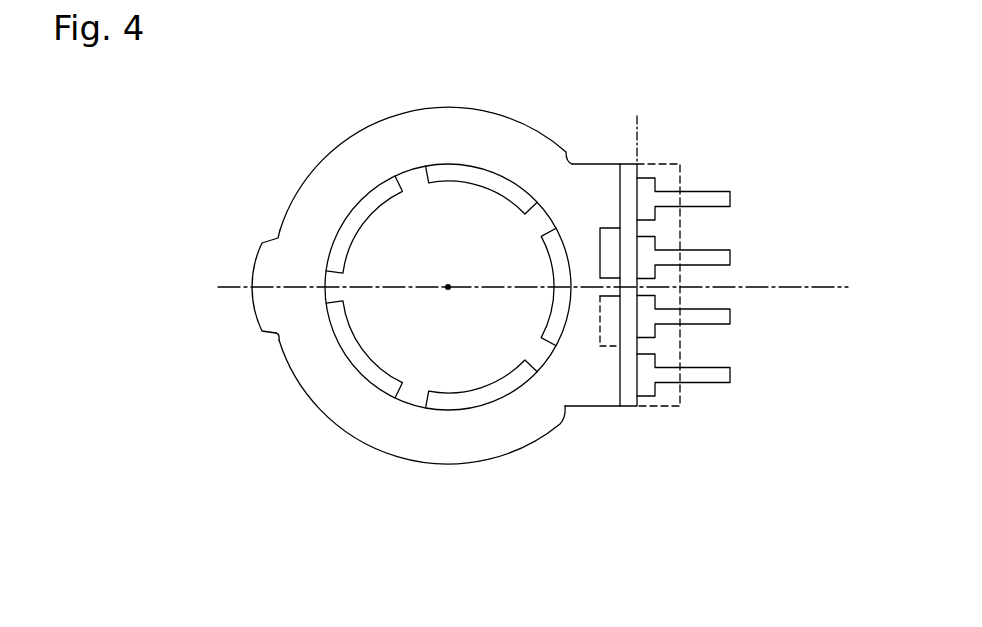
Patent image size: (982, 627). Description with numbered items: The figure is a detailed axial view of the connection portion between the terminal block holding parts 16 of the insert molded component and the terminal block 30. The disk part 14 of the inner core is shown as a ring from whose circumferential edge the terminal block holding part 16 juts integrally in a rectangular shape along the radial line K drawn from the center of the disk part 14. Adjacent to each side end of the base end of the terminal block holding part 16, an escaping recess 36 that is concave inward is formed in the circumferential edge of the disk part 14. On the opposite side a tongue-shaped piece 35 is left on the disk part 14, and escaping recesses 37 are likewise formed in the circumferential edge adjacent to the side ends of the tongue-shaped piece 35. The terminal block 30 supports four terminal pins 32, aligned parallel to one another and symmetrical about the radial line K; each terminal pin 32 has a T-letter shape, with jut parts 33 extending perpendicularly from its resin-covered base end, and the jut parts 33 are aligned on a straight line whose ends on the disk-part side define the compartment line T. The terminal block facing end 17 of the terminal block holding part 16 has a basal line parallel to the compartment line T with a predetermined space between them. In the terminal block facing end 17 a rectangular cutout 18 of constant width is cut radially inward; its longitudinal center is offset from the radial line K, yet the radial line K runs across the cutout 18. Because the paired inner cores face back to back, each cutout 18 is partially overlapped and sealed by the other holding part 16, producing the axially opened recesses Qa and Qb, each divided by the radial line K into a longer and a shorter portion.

The disk part 14 is at (338, 170).
The terminal block holding part 16 is at (592, 397).
The terminal block facing end 17 is at (625, 392).
The cutout 18 is at (600, 333).
The terminal block 30 is at (683, 399).
The terminal pin 32 is at (731, 316).
The jut part 33 is at (656, 218).
The tongue-shaped piece 35 is at (253, 318).
The escaping recess 36 is at (577, 155).
The escaping recess 37 is at (272, 338).
The radial line K is at (545, 286).
The compartment line T is at (638, 123).
The recess Qa is at (613, 330).
The recess Qb is at (613, 240).